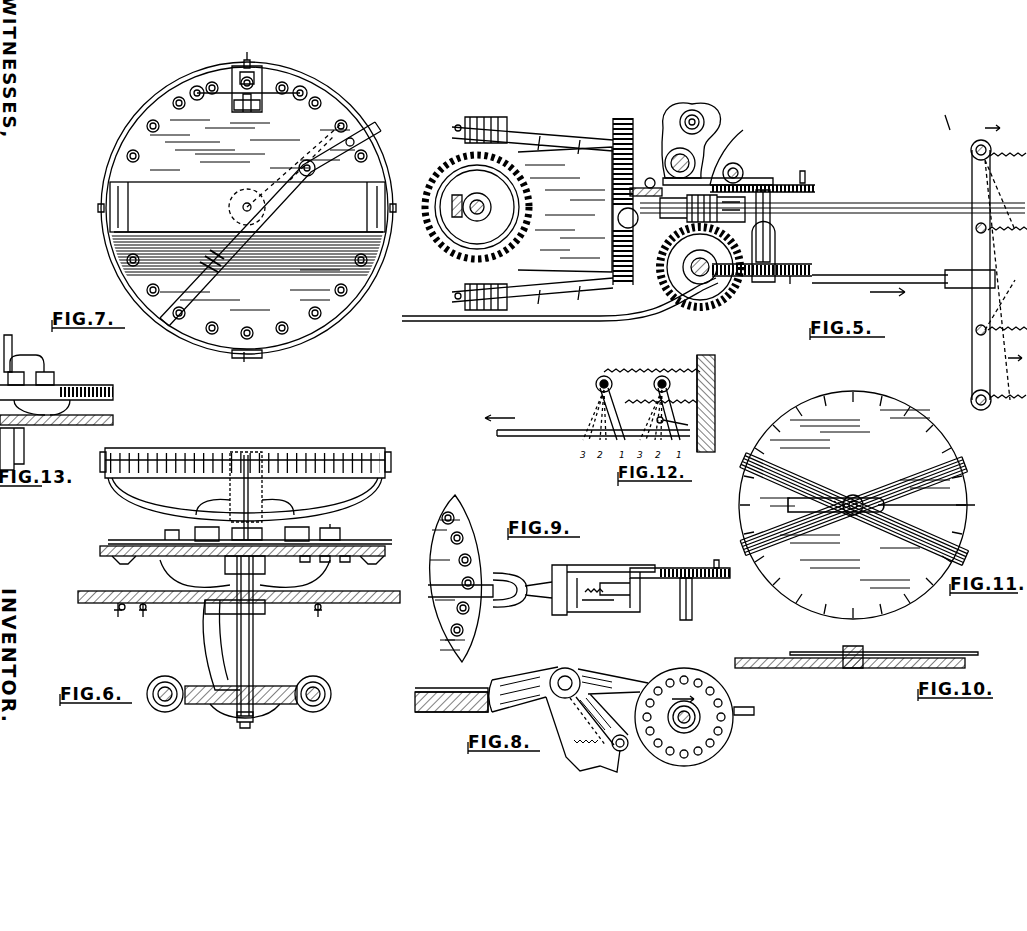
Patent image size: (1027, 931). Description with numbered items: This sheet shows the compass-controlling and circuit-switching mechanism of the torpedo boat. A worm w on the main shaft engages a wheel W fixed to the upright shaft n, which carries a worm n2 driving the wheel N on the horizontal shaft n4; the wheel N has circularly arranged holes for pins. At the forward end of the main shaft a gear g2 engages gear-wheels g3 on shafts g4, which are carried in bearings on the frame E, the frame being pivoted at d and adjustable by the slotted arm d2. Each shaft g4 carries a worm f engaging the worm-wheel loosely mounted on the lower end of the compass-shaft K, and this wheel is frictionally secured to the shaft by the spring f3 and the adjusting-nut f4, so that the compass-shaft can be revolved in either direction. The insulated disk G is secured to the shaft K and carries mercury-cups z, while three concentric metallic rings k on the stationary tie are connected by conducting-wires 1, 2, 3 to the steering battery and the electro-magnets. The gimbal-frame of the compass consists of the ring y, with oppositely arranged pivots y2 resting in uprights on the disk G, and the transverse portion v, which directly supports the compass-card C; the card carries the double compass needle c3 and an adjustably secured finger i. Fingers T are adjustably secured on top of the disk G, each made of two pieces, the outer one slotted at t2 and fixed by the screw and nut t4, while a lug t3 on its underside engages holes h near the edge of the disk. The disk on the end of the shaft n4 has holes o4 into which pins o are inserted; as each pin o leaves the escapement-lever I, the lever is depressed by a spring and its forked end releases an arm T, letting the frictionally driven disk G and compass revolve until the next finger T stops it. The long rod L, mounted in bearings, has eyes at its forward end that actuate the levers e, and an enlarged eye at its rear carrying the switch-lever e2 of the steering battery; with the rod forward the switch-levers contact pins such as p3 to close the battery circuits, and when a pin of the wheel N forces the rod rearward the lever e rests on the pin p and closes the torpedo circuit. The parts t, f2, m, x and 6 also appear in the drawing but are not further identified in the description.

In FIG. 7, the circular frame portion y is at (300, 344).
In FIG. 6, the circular frame portion y is at (408, 450).
In FIG. 7, the pivots y2 is at (247, 52).
In FIG. 6, the pivots y2 is at (247, 448).
In FIG. 7, the mercury-cups z is at (195, 86).
In FIG. 13, the mercury-cups z is at (78, 356).
In FIG. 6, the mercury-cups z is at (252, 532).
In FIG. 7, the transverse portion of gimbal-frame v is at (247, 215).
In FIG. 13, the transverse portion of gimbal-frame v is at (44, 404).
In FIG. 6, the transverse portion of gimbal-frame v is at (330, 515).
In FIG. 7, the finger T is at (270, 180).
In FIG. 6, the finger T is at (250, 534).
In FIG. 7, the pin t is at (348, 148).
In FIG. 7, the slot t2 is at (312, 160).
In FIG. 6, the projection or lug t3 is at (385, 556).
In FIG. 8, the projection or lug t3 is at (466, 706).
In FIG. 6, the screw and nut t4 is at (330, 525).
In FIG. 7, the holes h is at (128, 259).
In FIG. 6, the holes h is at (247, 568).
In FIG. 9, the holes h is at (454, 516).
In FIG. 7, the insulated disk G is at (287, 297).
In FIG. 13, the insulated disk G is at (90, 392).
In FIG. 6, the insulated disk G is at (100, 550).
In FIG. 9, the insulated disk G is at (456, 578).
In FIG. 5, the worm f is at (480, 116).
In FIG. 6, the worm f is at (165, 676).
In FIG. 5, the hub / bracket f2 is at (458, 196).
In FIG. 13, the hub / bracket f2 is at (24, 440).
In FIG. 6, the hub / bracket f2 is at (212, 637).
In FIG. 6, the spring f3 is at (270, 712).
In FIG. 6, the adjusting-nut f4 is at (244, 728).
In FIG. 5, the compass-shaft K is at (480, 198).
In FIG. 6, the compass-shaft K is at (254, 637).
In FIG. 6, the metallic rings k is at (334, 569).
In FIG. 5, the gear g2 is at (618, 212).
In FIG. 5, the gear-wheels g3 is at (618, 122).
In FIG. 5, the shafts g4 is at (559, 128).
In FIG. 5, the pivot d is at (697, 158).
In FIG. 5, the slotted arm d2 is at (720, 118).
In FIG. 5, the worm w is at (730, 149).
In FIG. 5, the escapement-lever I is at (755, 178).
In FIG. 9, the escapement-lever I is at (608, 562).
In FIG. 8, the escapement-lever I is at (616, 672).
In FIG. 5, the pins o is at (802, 172).
In FIG. 9, the pins o is at (714, 554).
In FIG. 8, the pins o is at (681, 678).
In FIG. 8, the holes o4 is at (708, 690).
In FIG. 5, the wheel N is at (815, 266).
In FIG. 5, the upright shaft n is at (696, 262).
In FIG. 5, the worm n2 is at (703, 256).
In FIG. 5, the horizontal shaft n4 is at (770, 220).
In FIG. 9, the horizontal shaft n4 is at (692, 604).
In FIG. 8, the horizontal shaft n4 is at (708, 738).
In FIG. 5, the frame E is at (565, 209).
In FIG. 5, the wheel W is at (700, 267).
In FIG. 5, the rod or connection L is at (522, 322).
In FIG. 12, the rod or connection L is at (528, 432).
In FIG. 12, the lever e is at (672, 398).
In FIG. 5, the switch-lever e2 is at (990, 182).
In FIG. 5, the pin p is at (995, 240).
In FIG. 12, the pin p is at (675, 426).
In FIG. 5, the pin p3 is at (974, 330).
In FIG. 12, the pivot m is at (664, 376).
In FIG. 13, the finger i is at (8, 334).
In FIG. 11, the finger i is at (972, 503).
In FIG. 10, the finger i is at (930, 652).
In FIG. 12, the wall x is at (714, 403).
In FIG. 11, the compass-card C is at (853, 505).
In FIG. 10, the compass-card C is at (840, 668).
In FIG. 11, the compass needle c3 is at (905, 474).
In FIG. 10, the compass needle c3 is at (968, 662).
In FIG. 6, the conducting-wire 1 is at (118, 607).
In FIG. 6, the conducting-wire 2 is at (322, 612).
In FIG. 6, the conducting-wire 3 is at (147, 607).
In FIG. 8, the pin 6 is at (680, 756).